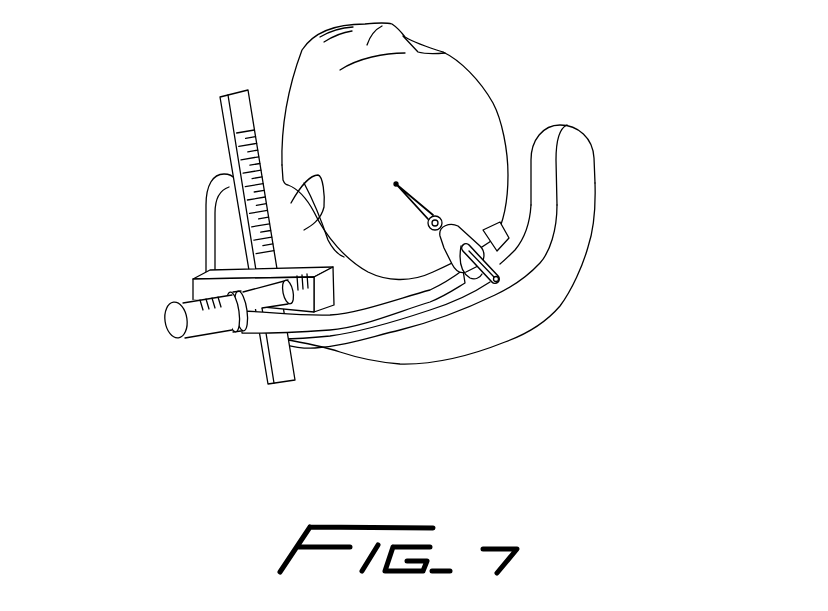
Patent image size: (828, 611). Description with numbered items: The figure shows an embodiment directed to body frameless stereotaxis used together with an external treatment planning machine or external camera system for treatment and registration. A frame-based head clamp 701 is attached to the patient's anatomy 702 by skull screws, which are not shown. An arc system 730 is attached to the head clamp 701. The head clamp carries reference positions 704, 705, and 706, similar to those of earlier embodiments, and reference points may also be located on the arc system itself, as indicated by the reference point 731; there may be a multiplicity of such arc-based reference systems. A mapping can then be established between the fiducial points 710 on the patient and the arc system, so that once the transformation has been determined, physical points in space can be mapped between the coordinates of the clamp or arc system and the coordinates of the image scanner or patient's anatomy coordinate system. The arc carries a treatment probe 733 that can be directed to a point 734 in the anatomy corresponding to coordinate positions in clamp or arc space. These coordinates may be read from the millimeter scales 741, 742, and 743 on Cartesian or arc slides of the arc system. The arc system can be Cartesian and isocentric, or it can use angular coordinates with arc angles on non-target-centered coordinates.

The head clamp 701 is at (550, 270).
The patient's anatomy 702 is at (477, 103).
The reference position 704 is at (250, 217).
The reference position 705 is at (428, 342).
The reference position 706 is at (581, 177).
The fiducial points 710 is at (359, 115).
The arc system 730 is at (258, 332).
The reference point 731 is at (240, 103).
The treatment probe 733 is at (493, 280).
The point in the anatomy 734 is at (397, 183).
The millimeter scale 741 is at (205, 306).
The millimeter scale 742 is at (239, 140).
The millimeter scale 743 is at (303, 292).